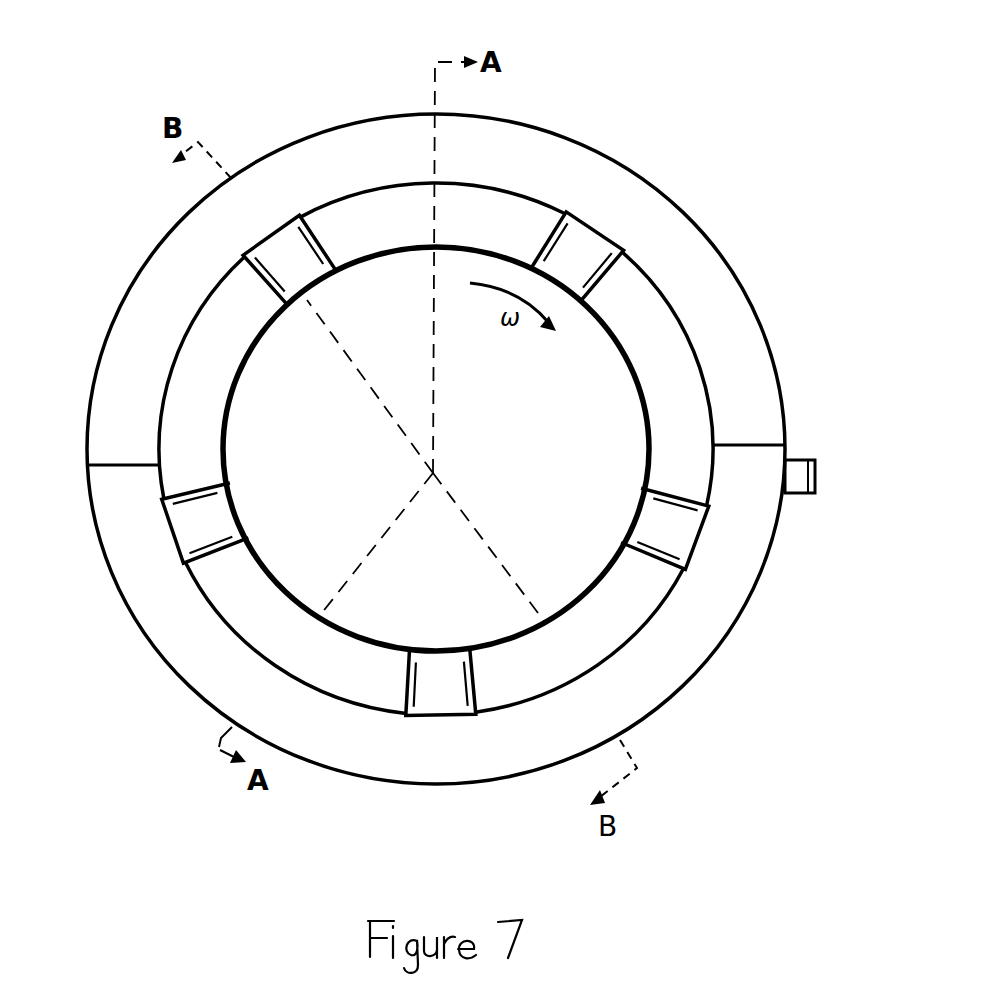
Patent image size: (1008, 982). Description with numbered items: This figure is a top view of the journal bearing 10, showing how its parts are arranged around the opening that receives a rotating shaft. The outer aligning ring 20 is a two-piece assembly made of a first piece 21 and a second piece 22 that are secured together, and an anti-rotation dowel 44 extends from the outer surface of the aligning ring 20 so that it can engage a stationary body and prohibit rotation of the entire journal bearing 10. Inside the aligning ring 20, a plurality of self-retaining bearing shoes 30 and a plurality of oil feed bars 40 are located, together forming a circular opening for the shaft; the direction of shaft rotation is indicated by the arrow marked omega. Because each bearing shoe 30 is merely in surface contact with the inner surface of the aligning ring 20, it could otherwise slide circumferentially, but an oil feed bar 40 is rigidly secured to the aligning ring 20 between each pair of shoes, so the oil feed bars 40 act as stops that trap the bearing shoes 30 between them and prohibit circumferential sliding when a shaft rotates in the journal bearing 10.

The journal bearing 10 is at (457, 430).
The aligning ring 20 is at (481, 449).
The first piece 21 is at (755, 407).
The second piece 22 is at (743, 553).
The self-retaining shoe 30 is at (490, 200).
The oil feed bar 40 is at (293, 253).
The anti-rotation dowel 44 is at (817, 477).